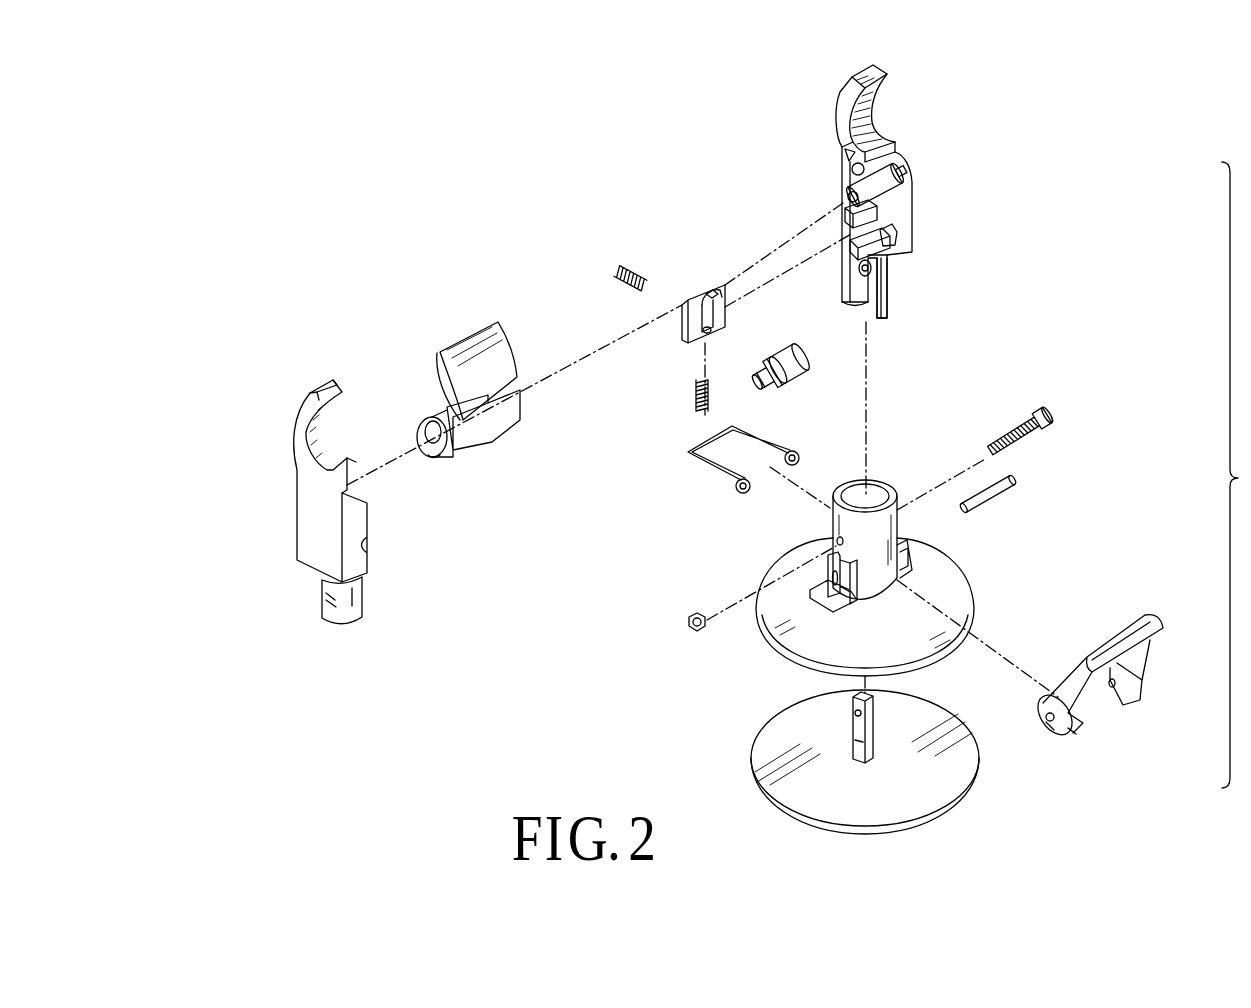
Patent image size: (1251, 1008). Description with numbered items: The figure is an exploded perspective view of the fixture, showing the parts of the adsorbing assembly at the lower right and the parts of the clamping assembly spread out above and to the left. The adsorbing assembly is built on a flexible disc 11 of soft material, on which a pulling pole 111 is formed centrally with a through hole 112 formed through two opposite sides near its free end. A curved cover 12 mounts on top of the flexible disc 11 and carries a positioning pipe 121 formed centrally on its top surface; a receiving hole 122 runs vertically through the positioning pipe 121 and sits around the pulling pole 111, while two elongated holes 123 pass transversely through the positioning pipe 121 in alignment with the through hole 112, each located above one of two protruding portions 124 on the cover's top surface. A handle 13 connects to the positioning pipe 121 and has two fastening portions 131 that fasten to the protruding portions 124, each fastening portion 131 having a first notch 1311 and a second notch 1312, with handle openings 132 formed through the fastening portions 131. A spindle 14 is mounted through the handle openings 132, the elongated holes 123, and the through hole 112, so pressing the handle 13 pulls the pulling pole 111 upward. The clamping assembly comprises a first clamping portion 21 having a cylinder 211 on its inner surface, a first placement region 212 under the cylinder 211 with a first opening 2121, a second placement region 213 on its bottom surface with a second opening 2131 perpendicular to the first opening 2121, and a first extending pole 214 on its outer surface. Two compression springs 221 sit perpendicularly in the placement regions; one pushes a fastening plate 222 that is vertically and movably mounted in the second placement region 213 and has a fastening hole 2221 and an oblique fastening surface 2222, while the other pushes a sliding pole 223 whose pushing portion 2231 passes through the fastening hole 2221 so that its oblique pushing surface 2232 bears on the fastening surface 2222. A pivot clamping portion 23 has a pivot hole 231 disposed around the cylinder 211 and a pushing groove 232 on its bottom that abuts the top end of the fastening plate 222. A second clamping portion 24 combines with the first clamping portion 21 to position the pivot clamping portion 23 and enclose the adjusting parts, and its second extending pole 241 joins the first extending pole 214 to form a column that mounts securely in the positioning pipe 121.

The flexible disc 11 is at (922, 707).
The pulling pole 111 is at (857, 748).
The through hole 112 is at (858, 713).
The cover 12 is at (955, 578).
The positioning pipe 121 is at (838, 527).
The receiving hole 122 is at (873, 492).
The elongated holes 123 is at (833, 600).
The protruding portions 124 is at (904, 552).
The handle 13 is at (1145, 615).
The fastening portions 131 is at (1130, 698).
The handle openings 132 is at (1046, 718).
The first notch 1311 is at (1052, 728).
The second notch 1312 is at (1073, 733).
The spindle 14 is at (997, 492).
The first clamping portion 21 is at (905, 215).
The cylinder 211 is at (857, 182).
The first placement region 212 is at (845, 212).
The first opening 2121 is at (881, 236).
The second placement region 213 is at (884, 256).
The second opening 2131 is at (845, 252).
The first extending pole 214 is at (887, 310).
The compression springs 221 is at (622, 283).
The fastening plate 222 is at (683, 335).
The fastening hole 2221 is at (713, 283).
The fastening surface 2222 is at (720, 323).
The sliding pole 223 is at (795, 383).
The pushing portion 2231 is at (778, 351).
The pushing surface 2232 is at (757, 378).
The pivot clamping portion 23 is at (470, 440).
The pivot hole 231 is at (418, 436).
The pushing groove 232 is at (433, 458).
The second clamping portion 24 is at (303, 512).
The second extending pole 241 is at (330, 613).